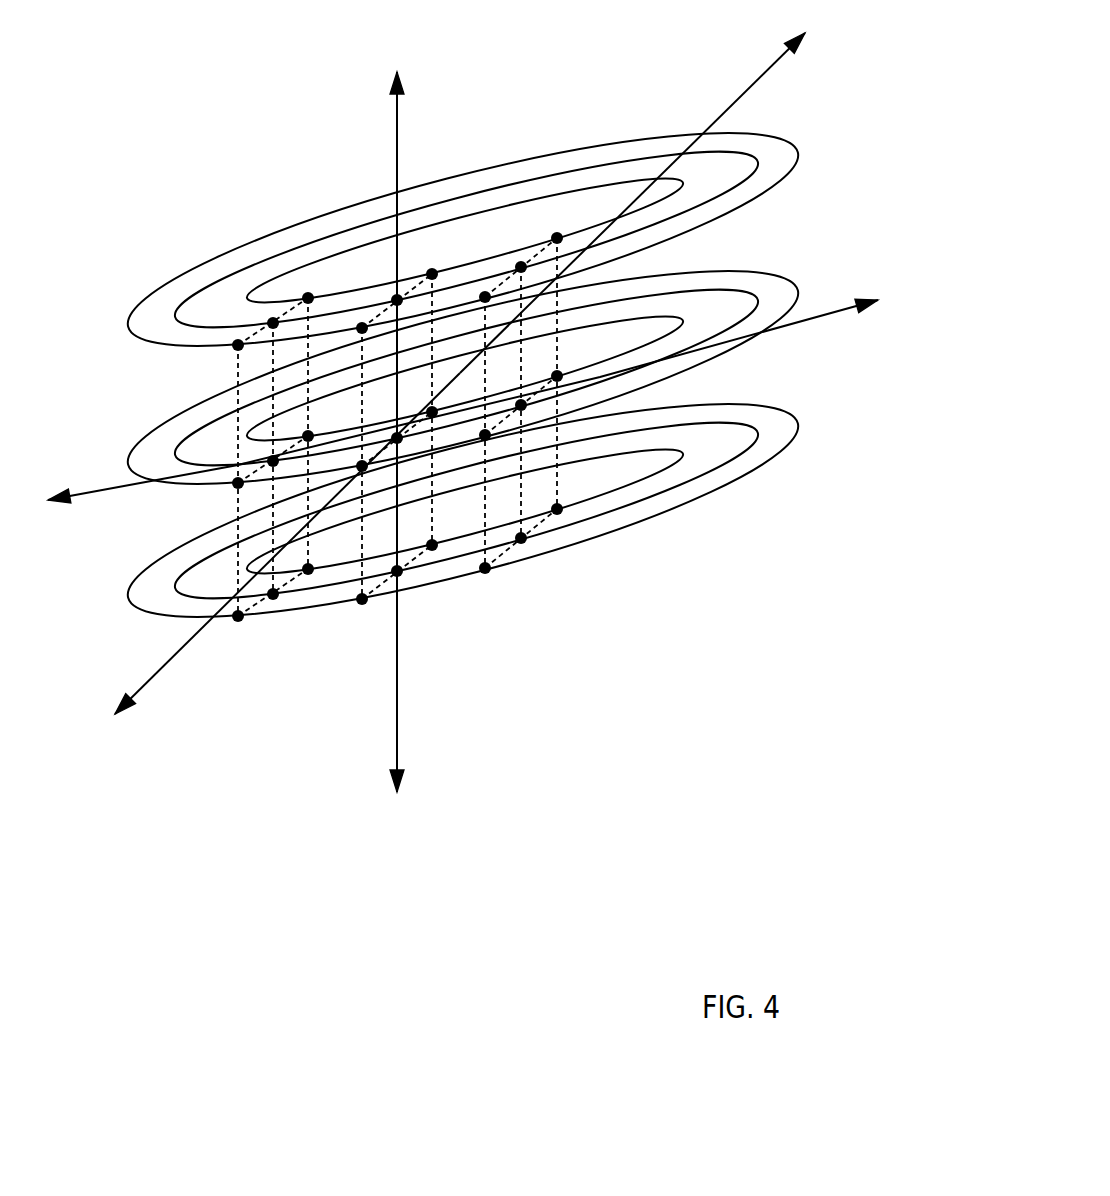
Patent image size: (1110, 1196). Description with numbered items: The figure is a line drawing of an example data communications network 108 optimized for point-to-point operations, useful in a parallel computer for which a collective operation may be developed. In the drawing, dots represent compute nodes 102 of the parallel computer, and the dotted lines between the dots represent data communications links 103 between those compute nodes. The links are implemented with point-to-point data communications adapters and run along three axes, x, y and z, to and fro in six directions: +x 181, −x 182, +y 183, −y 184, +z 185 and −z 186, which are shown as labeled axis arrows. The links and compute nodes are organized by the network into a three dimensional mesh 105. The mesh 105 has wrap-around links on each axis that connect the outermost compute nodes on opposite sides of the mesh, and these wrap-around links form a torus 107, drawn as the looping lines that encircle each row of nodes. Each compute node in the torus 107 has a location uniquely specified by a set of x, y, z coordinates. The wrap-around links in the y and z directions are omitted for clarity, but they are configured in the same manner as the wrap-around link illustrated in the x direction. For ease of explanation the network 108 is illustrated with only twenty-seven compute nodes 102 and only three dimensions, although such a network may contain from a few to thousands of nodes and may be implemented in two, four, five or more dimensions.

The compute nodes 102 is at (485, 570).
The data communications links 103 is at (237, 517).
The three dimensional mesh 105 is at (557, 236).
The torus 107 is at (225, 252).
The data communications network 108 is at (352, 1042).
The +x direction 181 is at (883, 332).
The −x direction 182 is at (12, 541).
The +y direction 183 is at (820, 59).
The −y direction 184 is at (79, 766).
The +z direction 185 is at (381, 62).
The −z direction 186 is at (385, 864).